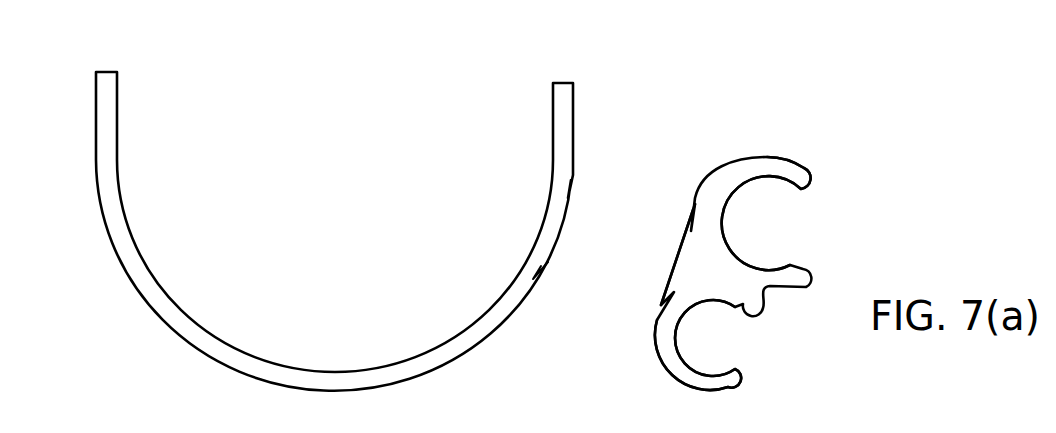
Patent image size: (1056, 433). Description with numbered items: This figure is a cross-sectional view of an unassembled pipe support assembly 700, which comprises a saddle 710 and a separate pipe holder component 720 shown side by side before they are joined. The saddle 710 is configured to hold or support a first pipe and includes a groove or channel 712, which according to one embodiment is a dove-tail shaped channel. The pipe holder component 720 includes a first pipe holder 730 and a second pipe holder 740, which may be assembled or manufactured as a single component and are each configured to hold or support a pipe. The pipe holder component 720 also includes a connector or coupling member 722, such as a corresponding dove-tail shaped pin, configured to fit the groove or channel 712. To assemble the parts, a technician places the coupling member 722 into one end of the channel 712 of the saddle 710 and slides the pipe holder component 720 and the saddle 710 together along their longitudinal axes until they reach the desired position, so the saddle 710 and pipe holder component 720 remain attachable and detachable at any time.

The pipe support assembly 700 is at (655, 66).
The saddle 710 is at (256, 156).
The groove or channel 712 is at (548, 262).
The pipe holder component 720 is at (855, 176).
The connector or coupling member 722 is at (676, 243).
The first pipe holder 730 is at (780, 227).
The second pipe holder 740 is at (740, 342).